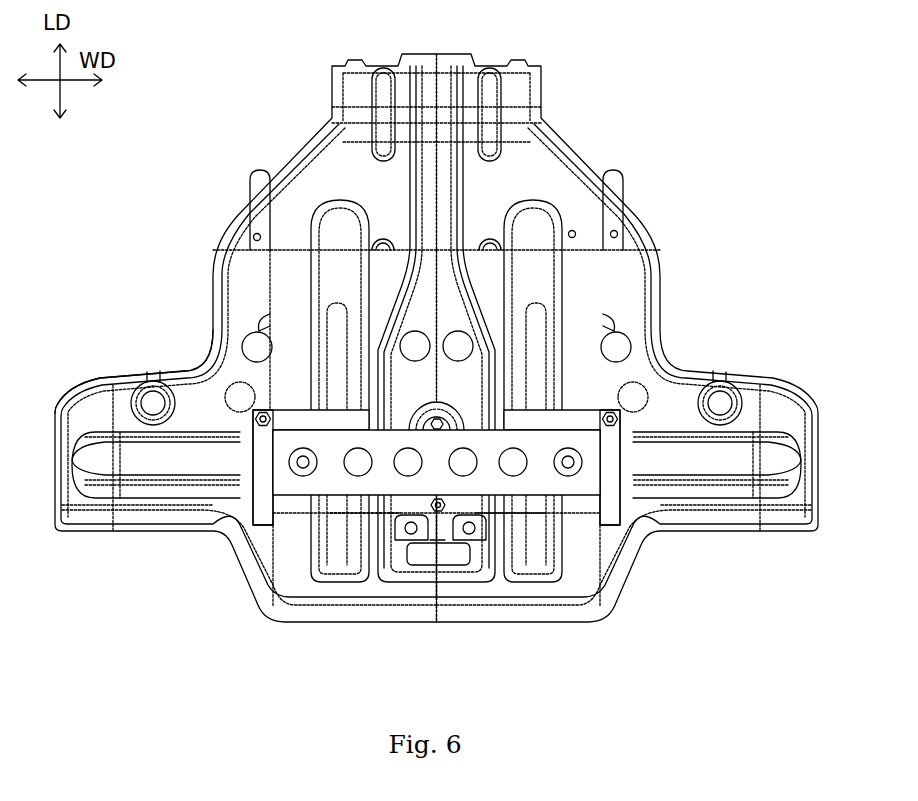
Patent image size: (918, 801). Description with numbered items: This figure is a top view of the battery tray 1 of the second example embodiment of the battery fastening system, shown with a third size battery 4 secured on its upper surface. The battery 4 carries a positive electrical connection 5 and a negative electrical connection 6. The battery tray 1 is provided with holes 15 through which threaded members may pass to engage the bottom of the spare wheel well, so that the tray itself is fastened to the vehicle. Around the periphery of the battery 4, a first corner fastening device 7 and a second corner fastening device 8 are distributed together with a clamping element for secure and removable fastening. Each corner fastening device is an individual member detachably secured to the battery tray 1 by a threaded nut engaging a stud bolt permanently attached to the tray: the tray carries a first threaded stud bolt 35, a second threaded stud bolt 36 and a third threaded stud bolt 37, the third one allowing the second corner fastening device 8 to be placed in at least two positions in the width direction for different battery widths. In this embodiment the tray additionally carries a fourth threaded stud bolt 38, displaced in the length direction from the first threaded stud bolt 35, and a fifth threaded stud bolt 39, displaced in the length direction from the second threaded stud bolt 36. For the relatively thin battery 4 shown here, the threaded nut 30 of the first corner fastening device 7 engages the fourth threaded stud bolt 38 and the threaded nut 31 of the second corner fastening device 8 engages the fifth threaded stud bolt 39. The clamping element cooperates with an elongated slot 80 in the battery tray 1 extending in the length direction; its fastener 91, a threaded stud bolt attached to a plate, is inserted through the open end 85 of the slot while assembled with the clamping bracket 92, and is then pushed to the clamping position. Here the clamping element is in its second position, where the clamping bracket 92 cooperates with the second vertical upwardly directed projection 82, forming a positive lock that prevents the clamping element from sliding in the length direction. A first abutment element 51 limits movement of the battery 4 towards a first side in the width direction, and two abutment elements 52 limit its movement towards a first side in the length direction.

The battery tray 1 is at (545, 182).
The battery 4 is at (283, 422).
The positive electrical connection 5 is at (303, 462).
The negative electrical connection 6 is at (614, 427).
The first corner fastening device 7 is at (273, 430).
The second corner fastening device 8 is at (580, 418).
The holes 15 is at (153, 398).
The threaded nut 30 is at (266, 428).
The threaded nut 31 is at (632, 480).
The first threaded stud bolt 35 is at (257, 237).
The second threaded stud bolt 36 is at (617, 233).
The third threaded stud bolt 37 is at (575, 232).
The fourth threaded stud bolt 38 is at (256, 423).
The fifth threaded stud bolt 39 is at (622, 432).
The first abutment element 51 is at (330, 450).
The abutment elements 52 is at (488, 237).
The elongated slot 80 is at (438, 543).
The second vertical upwardly directed projection 82 is at (405, 527).
The open end 85 is at (453, 557).
The fastener 91 is at (448, 506).
The clamping bracket 92 is at (407, 506).